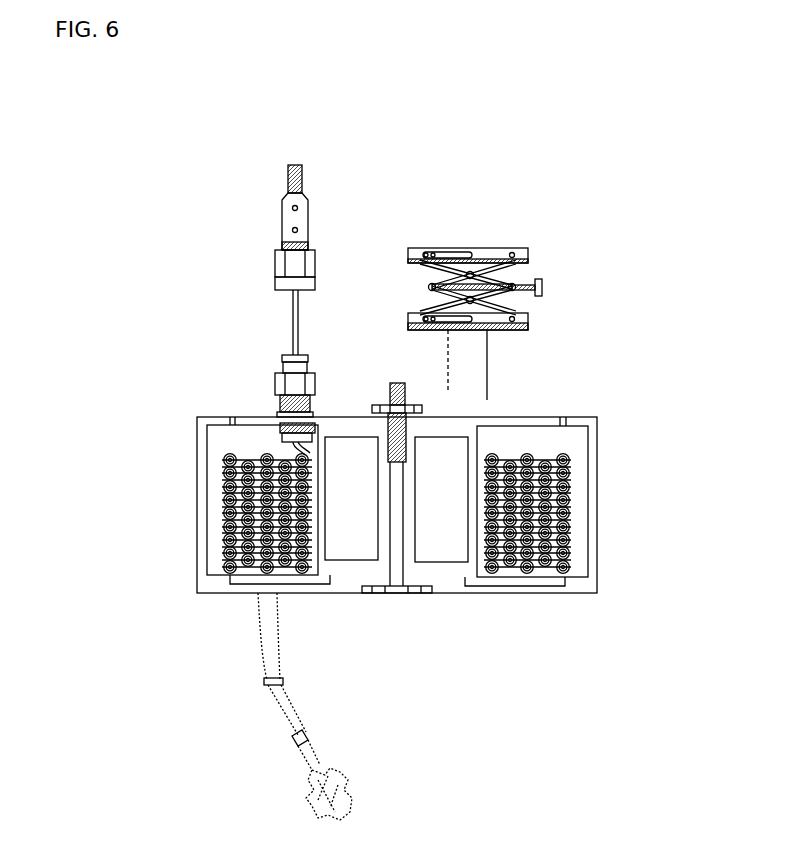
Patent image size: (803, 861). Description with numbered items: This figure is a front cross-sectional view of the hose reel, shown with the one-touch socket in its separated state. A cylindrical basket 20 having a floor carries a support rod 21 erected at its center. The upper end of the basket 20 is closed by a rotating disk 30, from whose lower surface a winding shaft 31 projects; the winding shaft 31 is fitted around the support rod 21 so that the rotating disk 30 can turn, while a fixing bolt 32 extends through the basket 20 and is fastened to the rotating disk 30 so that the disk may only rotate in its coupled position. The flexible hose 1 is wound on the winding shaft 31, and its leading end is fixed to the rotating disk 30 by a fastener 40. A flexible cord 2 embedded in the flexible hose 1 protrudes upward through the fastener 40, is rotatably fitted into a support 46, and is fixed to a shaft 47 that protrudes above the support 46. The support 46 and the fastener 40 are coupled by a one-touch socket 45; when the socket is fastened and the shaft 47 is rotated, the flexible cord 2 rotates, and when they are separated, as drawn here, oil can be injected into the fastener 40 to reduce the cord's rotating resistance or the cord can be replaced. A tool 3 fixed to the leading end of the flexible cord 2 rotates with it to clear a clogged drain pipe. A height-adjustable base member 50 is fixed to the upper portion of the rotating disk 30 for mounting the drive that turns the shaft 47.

The flexible hose 1 is at (267, 680).
The flexible cord 2 is at (298, 323).
The tool 3 is at (343, 783).
The basket 20 is at (596, 500).
The support rod 21 is at (385, 543).
The rotating disk 30 is at (512, 418).
The winding shaft 31 is at (470, 457).
The fixing bolt 32 is at (395, 517).
The fastener 40 is at (273, 435).
The one-touch socket 45 is at (280, 370).
The support 46 is at (287, 225).
The shaft 47 is at (288, 168).
The base member 50 is at (537, 322).